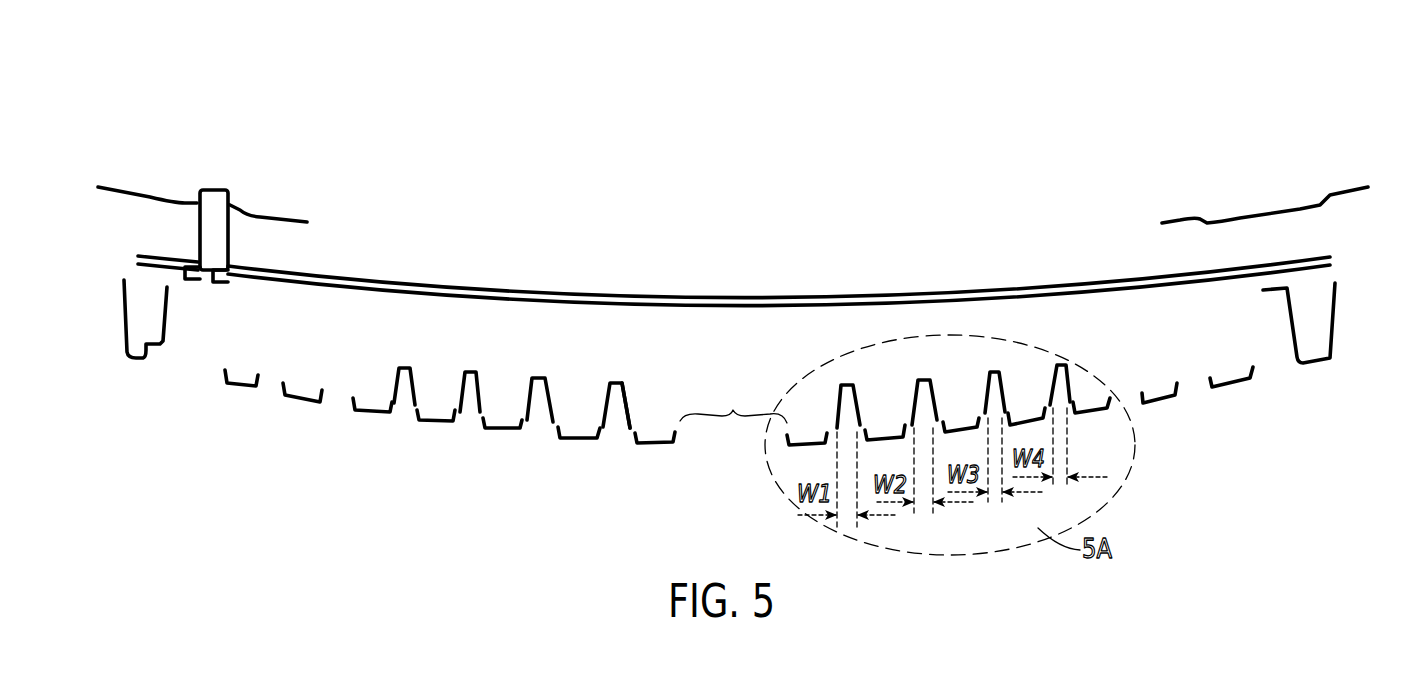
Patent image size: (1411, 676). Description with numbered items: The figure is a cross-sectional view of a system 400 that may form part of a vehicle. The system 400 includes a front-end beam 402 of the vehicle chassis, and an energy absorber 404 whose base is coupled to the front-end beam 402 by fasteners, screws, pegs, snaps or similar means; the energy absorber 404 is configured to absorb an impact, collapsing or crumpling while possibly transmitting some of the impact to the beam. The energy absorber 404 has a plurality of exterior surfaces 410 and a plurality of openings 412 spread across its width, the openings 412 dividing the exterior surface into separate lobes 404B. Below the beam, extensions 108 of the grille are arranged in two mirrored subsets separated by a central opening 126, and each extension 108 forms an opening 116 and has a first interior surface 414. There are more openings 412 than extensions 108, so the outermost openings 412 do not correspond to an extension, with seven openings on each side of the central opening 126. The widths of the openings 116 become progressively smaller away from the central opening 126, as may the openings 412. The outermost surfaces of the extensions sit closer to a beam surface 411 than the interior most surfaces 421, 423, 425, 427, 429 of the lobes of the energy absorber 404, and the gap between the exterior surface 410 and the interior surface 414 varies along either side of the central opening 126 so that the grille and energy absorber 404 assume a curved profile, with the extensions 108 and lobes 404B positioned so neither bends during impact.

The system 400 is at (733, 187).
The front-end beam 402 is at (443, 228).
The beam surface 411 is at (1018, 287).
The energy absorber 404 is at (1262, 422).
The exterior surfaces 410 is at (491, 436).
The first interior surface 414 is at (536, 410).
The lobes 404B is at (578, 441).
The opening 116 is at (617, 412).
The extension 108 is at (625, 420).
The central opening 126 is at (711, 412).
The interior most surface 421 is at (818, 435).
The interior most surface 423 is at (896, 428).
The interior most surface 425 is at (973, 421).
The interior most surface 427 is at (1040, 411).
The interior most surface 429 is at (1105, 401).
The openings 412 is at (1193, 385).